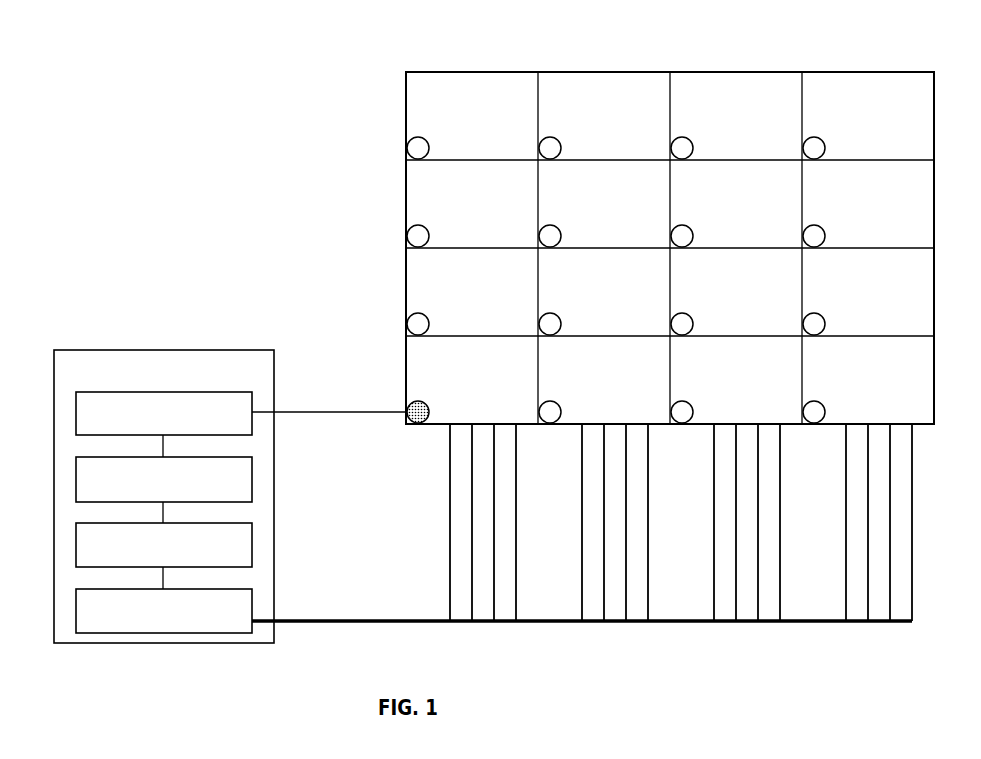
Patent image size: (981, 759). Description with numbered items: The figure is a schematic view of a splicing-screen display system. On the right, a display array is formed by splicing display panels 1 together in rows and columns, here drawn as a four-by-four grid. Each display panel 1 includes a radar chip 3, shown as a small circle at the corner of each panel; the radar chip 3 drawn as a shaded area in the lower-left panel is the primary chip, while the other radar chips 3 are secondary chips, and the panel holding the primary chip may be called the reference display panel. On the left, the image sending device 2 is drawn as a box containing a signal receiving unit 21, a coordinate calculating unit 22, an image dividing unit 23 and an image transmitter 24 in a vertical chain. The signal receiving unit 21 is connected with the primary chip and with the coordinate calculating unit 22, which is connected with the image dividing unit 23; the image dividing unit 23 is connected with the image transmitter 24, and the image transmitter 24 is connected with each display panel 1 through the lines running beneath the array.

The display panel 1 is at (594, 85).
The image sending device 2 is at (90, 356).
The radar chip 3 is at (412, 147).
The signal receiving unit 21 is at (76, 418).
The coordinate calculating unit 22 is at (76, 485).
The image dividing unit 23 is at (76, 555).
The image transmitter 24 is at (76, 622).